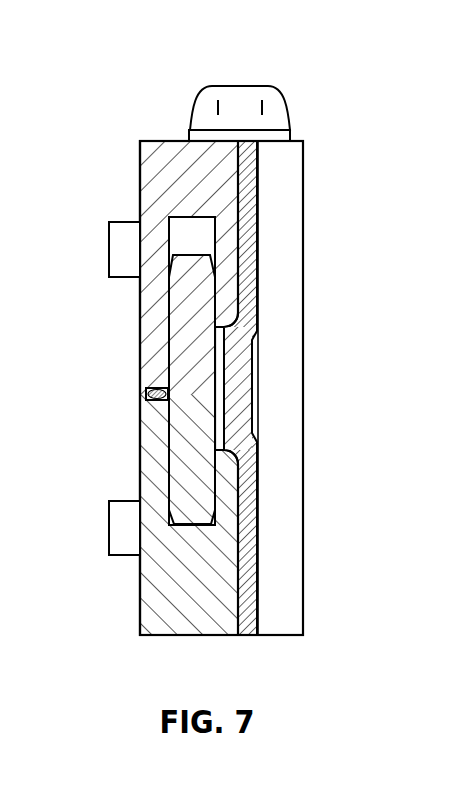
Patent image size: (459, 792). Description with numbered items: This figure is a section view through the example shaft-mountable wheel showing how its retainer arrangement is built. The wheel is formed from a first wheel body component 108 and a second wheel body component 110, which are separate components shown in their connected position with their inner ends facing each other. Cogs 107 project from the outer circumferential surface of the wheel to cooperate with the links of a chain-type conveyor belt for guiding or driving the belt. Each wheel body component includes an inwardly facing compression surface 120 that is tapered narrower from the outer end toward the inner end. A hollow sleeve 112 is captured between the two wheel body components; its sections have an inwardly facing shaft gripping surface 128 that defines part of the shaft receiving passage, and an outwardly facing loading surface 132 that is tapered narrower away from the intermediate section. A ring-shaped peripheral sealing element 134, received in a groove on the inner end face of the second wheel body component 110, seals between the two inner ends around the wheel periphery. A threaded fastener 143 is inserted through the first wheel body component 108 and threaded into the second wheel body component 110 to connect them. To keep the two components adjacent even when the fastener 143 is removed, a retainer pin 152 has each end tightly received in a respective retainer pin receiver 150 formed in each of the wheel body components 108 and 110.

The cog 107 is at (108, 246).
The first wheel body component 108 is at (158, 141).
The second wheel body component 110 is at (191, 636).
The hollow sleeve 112 is at (259, 392).
The compression surface 120 is at (237, 182).
The shaft gripping surface 128 is at (258, 269).
The loading surface 132 is at (244, 221).
The peripheral sealing element 134 is at (146, 393).
The threaded fastener 143 is at (243, 85).
The retainer pin receiver 150 is at (190, 230).
The retainer pin 152 is at (192, 340).